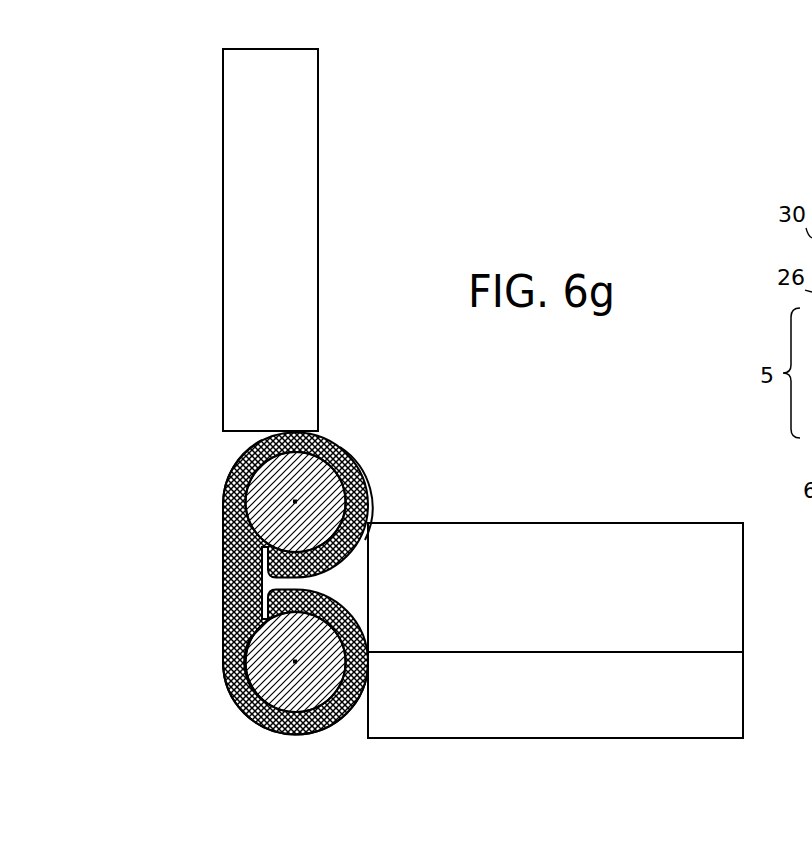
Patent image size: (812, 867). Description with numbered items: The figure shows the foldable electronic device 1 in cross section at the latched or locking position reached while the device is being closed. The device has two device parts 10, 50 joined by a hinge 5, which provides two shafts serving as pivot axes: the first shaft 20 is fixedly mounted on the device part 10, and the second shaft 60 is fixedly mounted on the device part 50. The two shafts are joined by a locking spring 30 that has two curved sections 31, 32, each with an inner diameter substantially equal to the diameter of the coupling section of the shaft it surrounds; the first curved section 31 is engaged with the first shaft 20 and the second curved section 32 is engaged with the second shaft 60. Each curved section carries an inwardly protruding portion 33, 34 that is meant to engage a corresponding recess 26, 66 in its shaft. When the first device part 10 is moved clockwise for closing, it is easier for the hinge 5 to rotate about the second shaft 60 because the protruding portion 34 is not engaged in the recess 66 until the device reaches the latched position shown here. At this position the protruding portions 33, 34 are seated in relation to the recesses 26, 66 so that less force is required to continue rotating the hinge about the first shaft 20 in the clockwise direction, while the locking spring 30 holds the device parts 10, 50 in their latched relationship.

The foldable electronic device 1 is at (380, 78).
The device part 10 is at (230, 183).
The device part 50 is at (752, 617).
The locking spring 30 is at (193, 496).
The first curved section 31 is at (229, 481).
The recess 26 is at (357, 484).
The first shaft 20 is at (328, 468).
The inwardly protruding portion 33 is at (268, 558).
The inwardly protruding portion 34 is at (270, 603).
The hinge 5 is at (155, 513).
The second curved section 32 is at (323, 735).
The second shaft 60 is at (252, 711).
The recess 66 is at (250, 655).